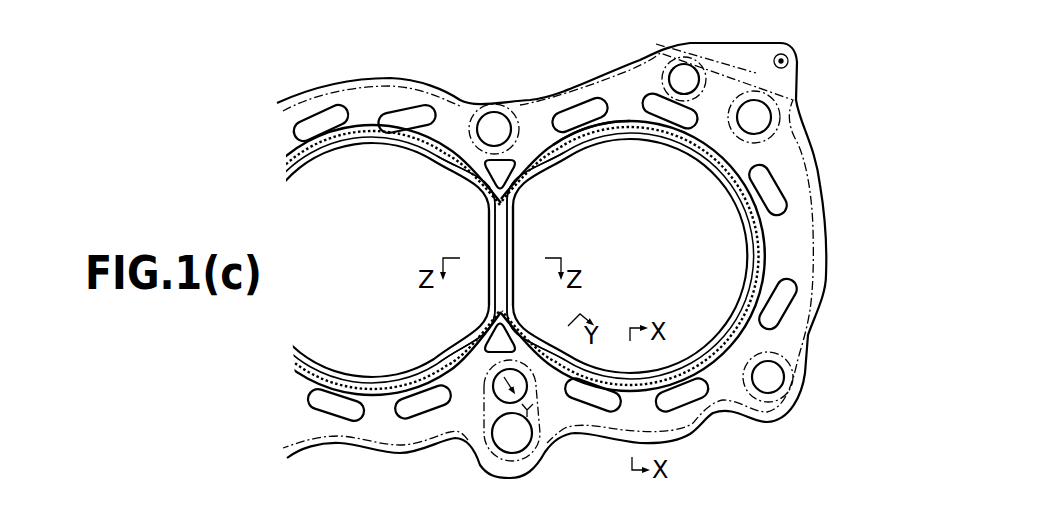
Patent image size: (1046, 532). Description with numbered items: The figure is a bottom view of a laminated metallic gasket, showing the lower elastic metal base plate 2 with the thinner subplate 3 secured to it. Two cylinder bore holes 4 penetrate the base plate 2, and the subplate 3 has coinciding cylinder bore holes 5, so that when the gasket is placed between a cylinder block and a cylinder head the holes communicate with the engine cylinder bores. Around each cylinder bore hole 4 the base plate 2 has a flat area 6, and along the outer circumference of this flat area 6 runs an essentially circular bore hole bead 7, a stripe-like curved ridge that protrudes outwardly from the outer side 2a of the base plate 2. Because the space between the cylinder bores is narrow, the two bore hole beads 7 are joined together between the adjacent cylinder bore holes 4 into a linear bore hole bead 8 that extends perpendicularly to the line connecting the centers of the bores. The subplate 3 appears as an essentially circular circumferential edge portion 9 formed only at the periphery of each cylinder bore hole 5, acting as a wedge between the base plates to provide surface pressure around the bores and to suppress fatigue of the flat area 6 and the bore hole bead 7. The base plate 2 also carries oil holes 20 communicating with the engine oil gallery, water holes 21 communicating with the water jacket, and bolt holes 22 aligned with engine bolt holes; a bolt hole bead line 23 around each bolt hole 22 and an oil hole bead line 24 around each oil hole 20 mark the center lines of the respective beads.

The base plate 2 is at (828, 266).
The outer side of the base plate 2a is at (805, 240).
The subplate 3 is at (632, 118).
The cylinder bore hole 4 is at (371, 251).
The cylinder bore hole 5 is at (367, 283).
The flat area 6 is at (389, 142).
The bore hole bead 7 is at (437, 142).
The linear bore hole bead 8 is at (518, 232).
The circumferential edge portion 9 is at (345, 140).
The oil hole 20 is at (686, 78).
The water hole 21 is at (322, 120).
The bolt hole 22 is at (494, 125).
The bolt hole bead line 23 is at (519, 110).
The oil hole bead line 24 is at (706, 92).